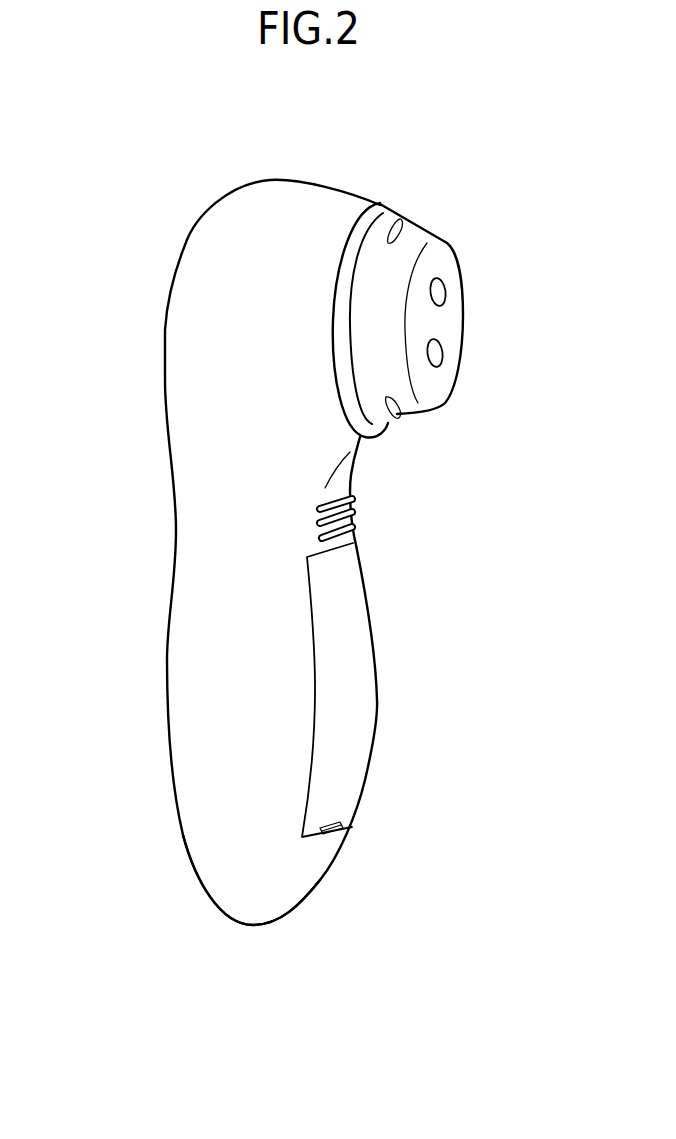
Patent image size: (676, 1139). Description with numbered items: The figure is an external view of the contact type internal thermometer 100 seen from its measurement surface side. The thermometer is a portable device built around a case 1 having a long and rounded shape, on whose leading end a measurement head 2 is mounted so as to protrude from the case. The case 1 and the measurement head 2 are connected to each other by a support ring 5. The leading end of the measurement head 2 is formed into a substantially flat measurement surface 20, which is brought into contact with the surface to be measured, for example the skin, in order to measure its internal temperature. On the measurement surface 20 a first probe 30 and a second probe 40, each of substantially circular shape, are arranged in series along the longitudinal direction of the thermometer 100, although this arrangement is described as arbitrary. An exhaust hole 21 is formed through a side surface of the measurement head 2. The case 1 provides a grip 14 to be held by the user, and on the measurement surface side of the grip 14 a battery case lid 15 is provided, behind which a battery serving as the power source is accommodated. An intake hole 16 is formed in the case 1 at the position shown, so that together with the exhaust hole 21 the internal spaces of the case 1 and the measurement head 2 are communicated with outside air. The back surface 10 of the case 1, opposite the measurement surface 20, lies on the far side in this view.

The contact type internal thermometer 100 is at (324, 978).
The case 1 is at (222, 208).
The measurement head 2 is at (467, 303).
The support ring 5 is at (378, 207).
The back surface 10 is at (165, 380).
The grip 14 is at (192, 795).
The battery case lid 15 is at (352, 762).
The intake hole 16 is at (357, 494).
The measurement surface 20 is at (452, 330).
The exhaust hole 21 is at (400, 230).
The first probe 30 is at (452, 287).
The second probe 40 is at (443, 362).